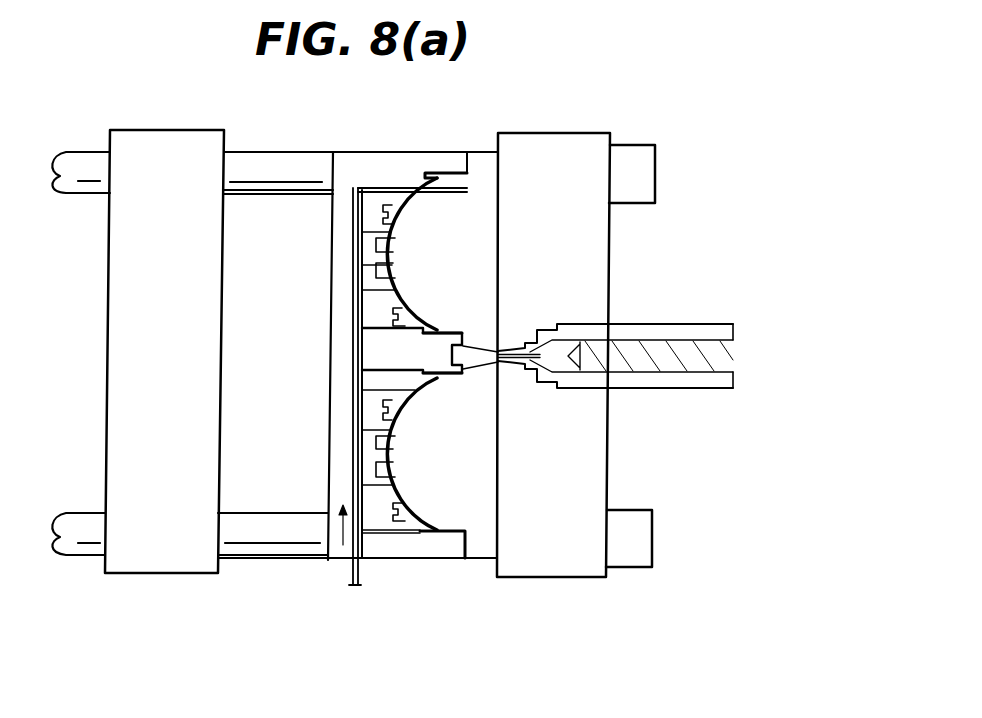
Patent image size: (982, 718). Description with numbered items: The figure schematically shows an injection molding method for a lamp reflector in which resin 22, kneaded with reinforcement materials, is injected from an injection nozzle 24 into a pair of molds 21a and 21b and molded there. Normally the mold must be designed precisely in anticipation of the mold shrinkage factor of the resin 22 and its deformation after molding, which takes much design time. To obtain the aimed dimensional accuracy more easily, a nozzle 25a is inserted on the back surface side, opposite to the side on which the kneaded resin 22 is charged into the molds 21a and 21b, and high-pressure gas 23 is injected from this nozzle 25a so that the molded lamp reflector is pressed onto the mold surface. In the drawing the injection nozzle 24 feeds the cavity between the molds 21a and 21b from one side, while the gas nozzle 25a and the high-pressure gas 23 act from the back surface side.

The resin 22 is at (426, 172).
The mold 21a is at (480, 279).
The mold 21b is at (397, 543).
The high-pressure gas 23 is at (333, 545).
The injection nozzle 24 is at (685, 382).
The nozzle 25a is at (362, 570).